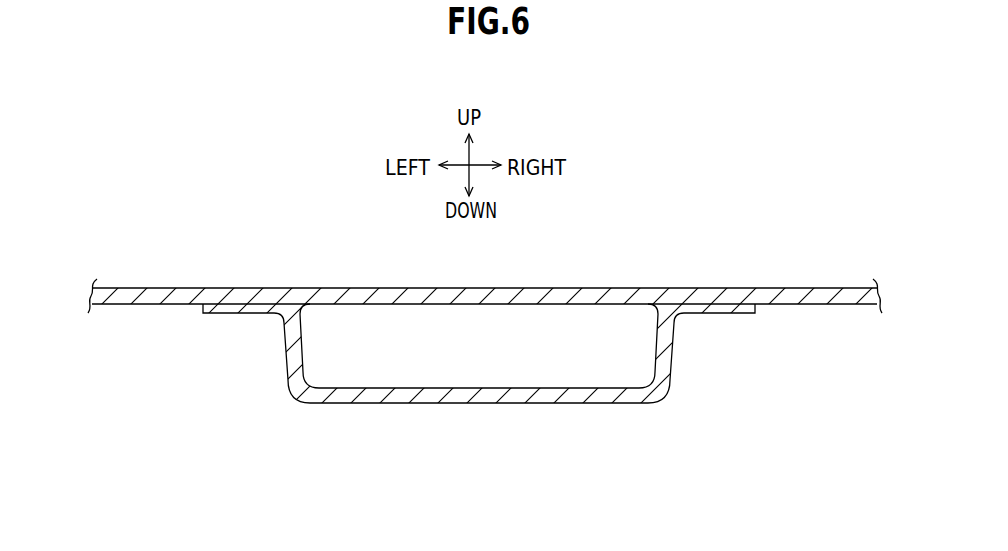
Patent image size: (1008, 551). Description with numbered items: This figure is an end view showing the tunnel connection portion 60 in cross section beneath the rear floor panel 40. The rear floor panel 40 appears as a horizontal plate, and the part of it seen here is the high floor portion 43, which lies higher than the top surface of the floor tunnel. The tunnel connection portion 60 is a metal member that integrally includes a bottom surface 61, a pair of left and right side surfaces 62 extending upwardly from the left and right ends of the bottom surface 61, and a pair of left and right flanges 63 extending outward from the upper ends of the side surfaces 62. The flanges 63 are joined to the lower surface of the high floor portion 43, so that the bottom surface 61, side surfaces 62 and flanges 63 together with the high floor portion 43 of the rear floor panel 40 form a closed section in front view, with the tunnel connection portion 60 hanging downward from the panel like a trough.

The rear floor panel 40 is at (474, 315).
The high floor portion 43 is at (803, 288).
The tunnel connection portion 60 is at (474, 387).
The bottom surface 61 is at (485, 404).
The side surfaces 62 is at (285, 362).
The flanges 63 is at (227, 314).